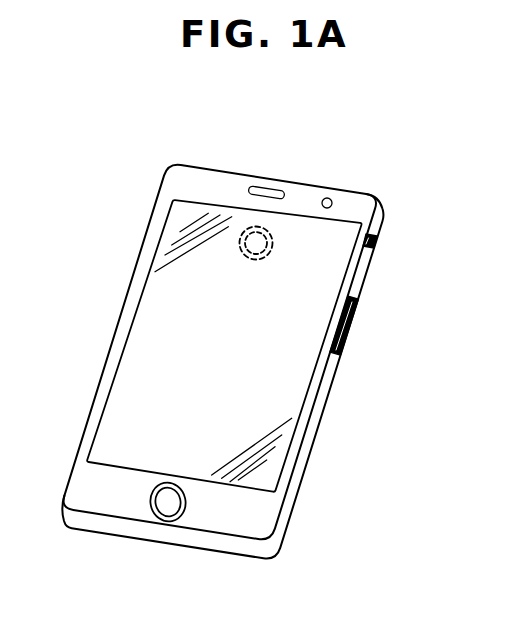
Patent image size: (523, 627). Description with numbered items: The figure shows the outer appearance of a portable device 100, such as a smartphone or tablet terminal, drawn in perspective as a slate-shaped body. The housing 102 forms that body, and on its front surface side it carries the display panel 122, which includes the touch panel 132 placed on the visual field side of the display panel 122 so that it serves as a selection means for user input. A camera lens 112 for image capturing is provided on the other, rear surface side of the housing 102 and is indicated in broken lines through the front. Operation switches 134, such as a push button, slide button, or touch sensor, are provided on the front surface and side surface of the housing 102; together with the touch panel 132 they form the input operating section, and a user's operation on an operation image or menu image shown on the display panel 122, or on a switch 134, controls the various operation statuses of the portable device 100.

The portable device 100 is at (259, 343).
The housing 102 is at (312, 440).
The camera lens 112 is at (268, 230).
The display panel 122 is at (203, 346).
The touch panel 132 is at (150, 327).
The operation button 134 is at (378, 237).